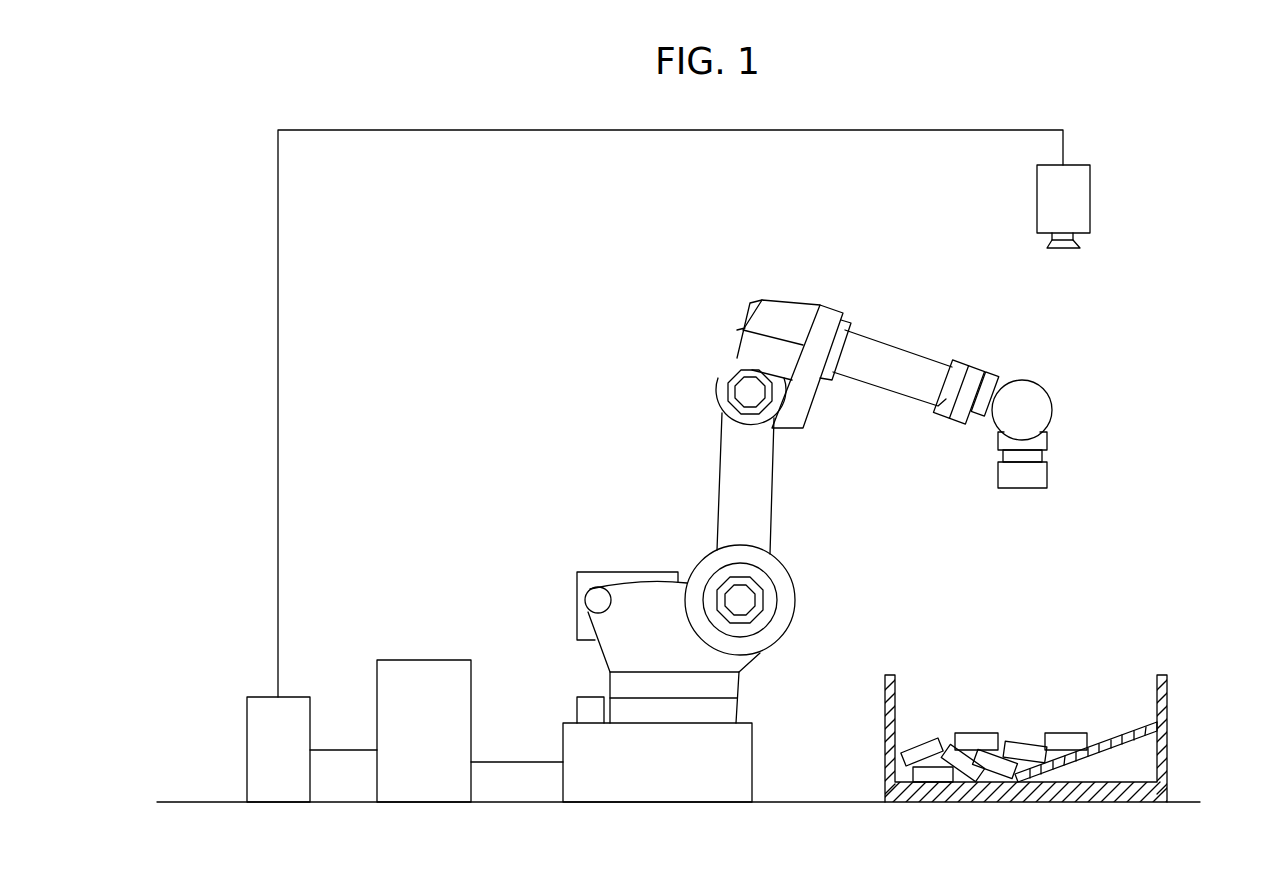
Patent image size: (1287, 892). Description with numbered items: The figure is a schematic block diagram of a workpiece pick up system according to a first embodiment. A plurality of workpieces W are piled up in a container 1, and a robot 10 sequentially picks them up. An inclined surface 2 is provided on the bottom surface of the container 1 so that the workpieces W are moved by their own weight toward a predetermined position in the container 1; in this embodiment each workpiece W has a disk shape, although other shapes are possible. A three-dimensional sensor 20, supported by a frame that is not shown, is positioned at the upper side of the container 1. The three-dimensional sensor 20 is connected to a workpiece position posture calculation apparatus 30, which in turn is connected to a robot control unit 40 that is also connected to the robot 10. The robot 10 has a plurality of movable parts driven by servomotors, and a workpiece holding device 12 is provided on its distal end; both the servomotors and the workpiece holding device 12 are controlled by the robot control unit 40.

The container 1 is at (1167, 738).
The inclined surface 2 is at (1123, 730).
The robot 10 is at (885, 392).
The workpiece holding device 12 is at (1047, 472).
The three-dimensional sensor 20 is at (1090, 197).
The workpiece position posture calculation apparatus 30 is at (247, 742).
The robot control unit 40 is at (418, 660).
The workpiece W is at (920, 743).